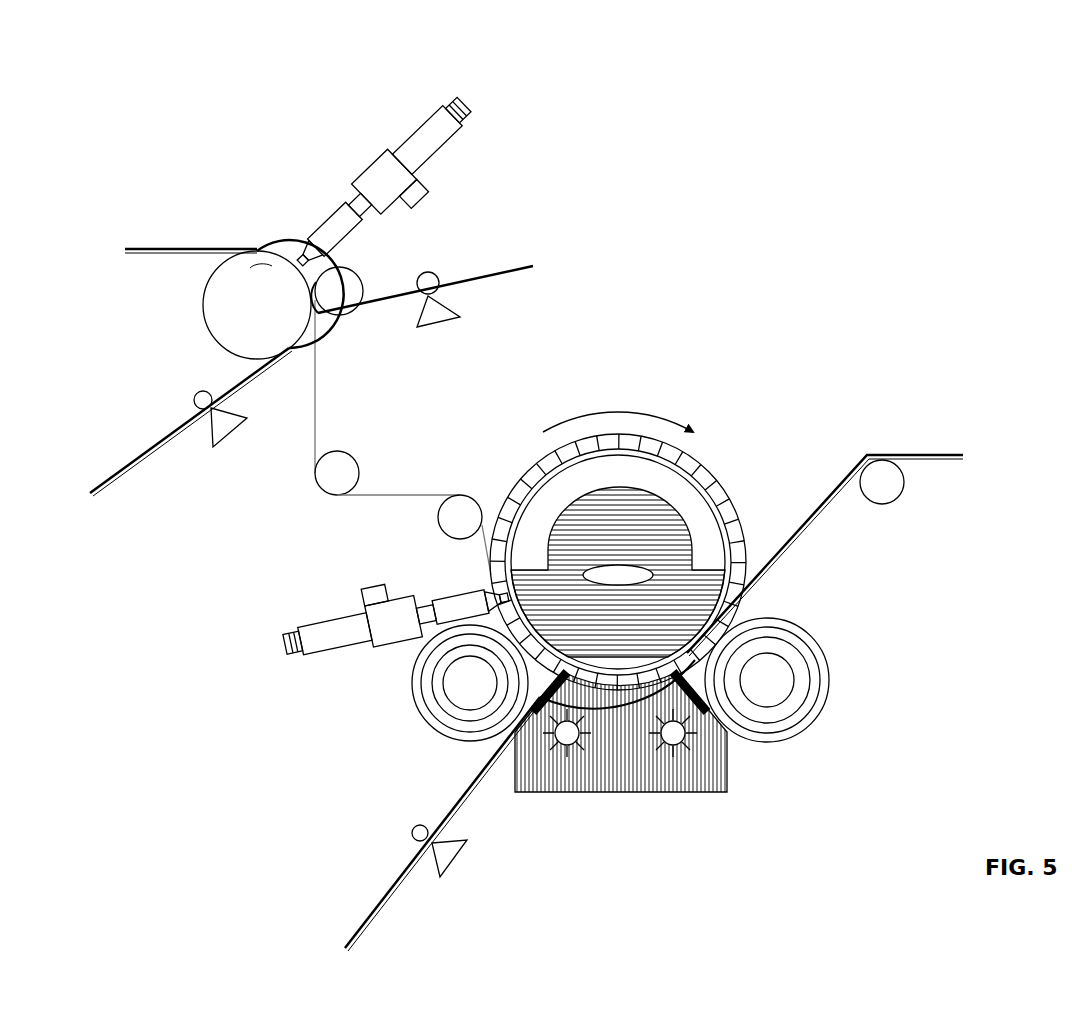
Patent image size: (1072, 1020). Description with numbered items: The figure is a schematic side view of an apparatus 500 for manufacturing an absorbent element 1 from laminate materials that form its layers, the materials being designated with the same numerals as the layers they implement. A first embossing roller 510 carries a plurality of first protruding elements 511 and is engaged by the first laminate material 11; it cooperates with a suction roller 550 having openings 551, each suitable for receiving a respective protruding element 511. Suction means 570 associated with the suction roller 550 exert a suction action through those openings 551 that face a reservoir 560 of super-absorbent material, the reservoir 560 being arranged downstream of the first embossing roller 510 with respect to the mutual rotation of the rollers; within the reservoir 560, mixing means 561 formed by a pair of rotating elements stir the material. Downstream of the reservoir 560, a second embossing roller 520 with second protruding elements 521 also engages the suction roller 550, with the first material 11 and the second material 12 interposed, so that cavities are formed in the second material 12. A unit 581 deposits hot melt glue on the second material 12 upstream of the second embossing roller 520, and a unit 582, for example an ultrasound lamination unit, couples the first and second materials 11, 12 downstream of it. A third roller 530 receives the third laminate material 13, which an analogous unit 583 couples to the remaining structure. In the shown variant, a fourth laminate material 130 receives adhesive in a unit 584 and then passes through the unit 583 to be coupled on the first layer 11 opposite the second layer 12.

The absorbent element 1 is at (94, 261).
The first laminate material 11 is at (963, 457).
The second laminate material 12 is at (358, 942).
The third laminate material 13 is at (90, 493).
The fourth laminate material 130 is at (535, 268).
The apparatus 500 is at (849, 238).
The first embossing roller 510 is at (835, 682).
The first protruding elements 511 is at (778, 616).
The second embossing roller 520 is at (407, 710).
The second protruding elements 521 is at (462, 624).
The third roller 530 is at (197, 319).
The suction roller 550 is at (733, 487).
The openings 551 is at (703, 455).
The reservoir 560 is at (688, 794).
The mixing means 561 is at (670, 756).
The suction means 570 is at (560, 522).
The glue depositing unit 581 is at (458, 866).
The coupling unit 582 is at (322, 597).
The coupling unit 583 is at (373, 113).
The adhesive feeding unit 584 is at (433, 333).